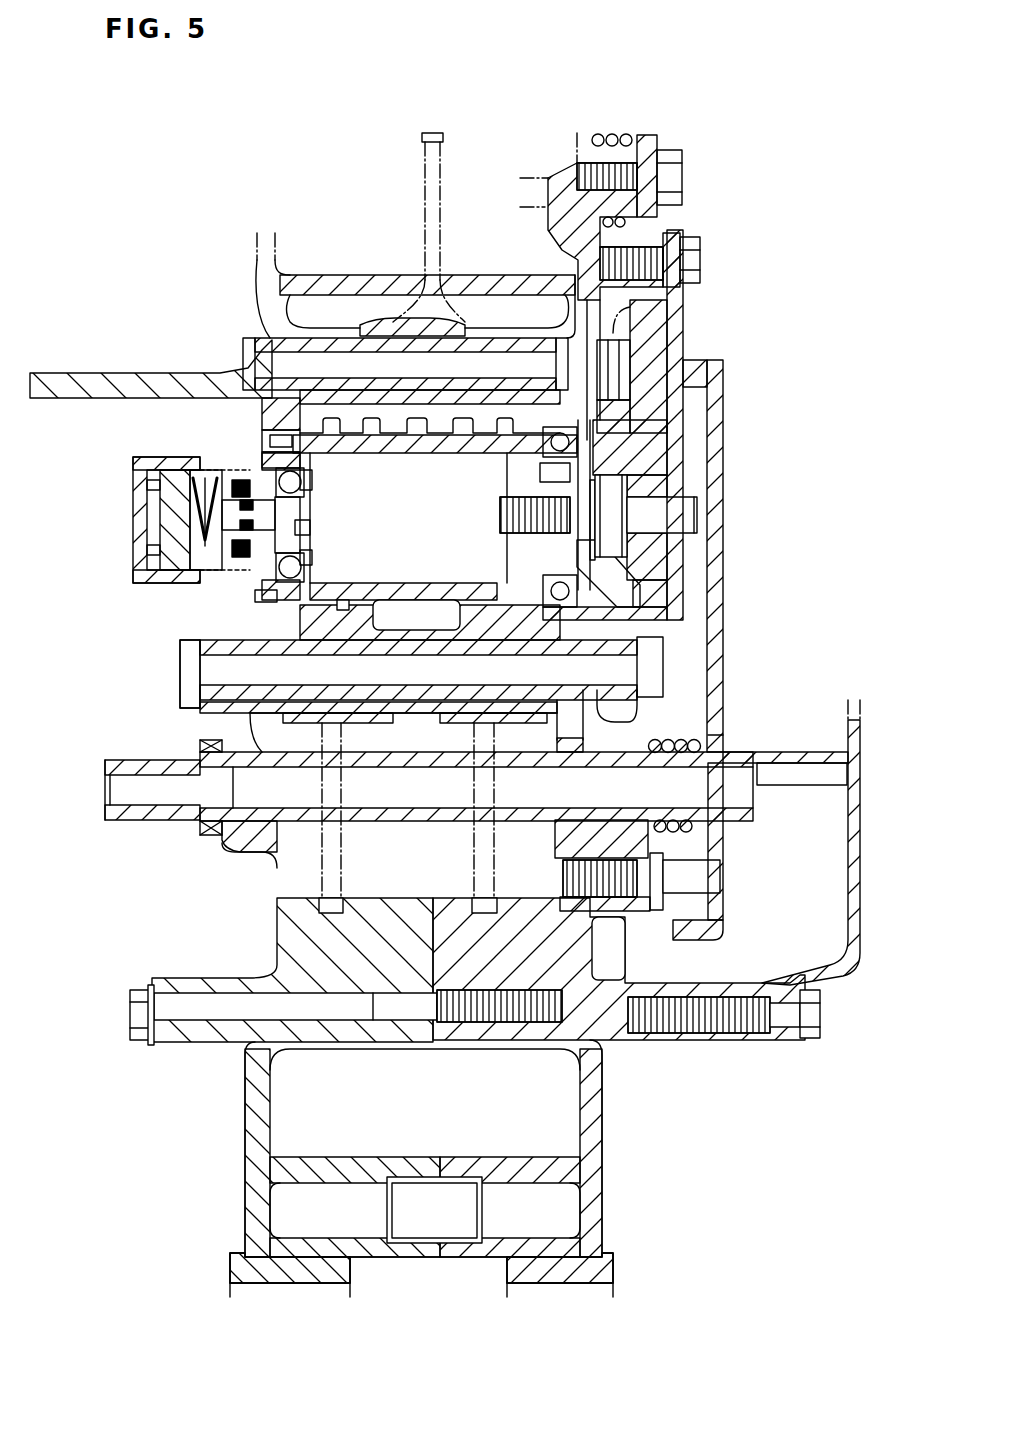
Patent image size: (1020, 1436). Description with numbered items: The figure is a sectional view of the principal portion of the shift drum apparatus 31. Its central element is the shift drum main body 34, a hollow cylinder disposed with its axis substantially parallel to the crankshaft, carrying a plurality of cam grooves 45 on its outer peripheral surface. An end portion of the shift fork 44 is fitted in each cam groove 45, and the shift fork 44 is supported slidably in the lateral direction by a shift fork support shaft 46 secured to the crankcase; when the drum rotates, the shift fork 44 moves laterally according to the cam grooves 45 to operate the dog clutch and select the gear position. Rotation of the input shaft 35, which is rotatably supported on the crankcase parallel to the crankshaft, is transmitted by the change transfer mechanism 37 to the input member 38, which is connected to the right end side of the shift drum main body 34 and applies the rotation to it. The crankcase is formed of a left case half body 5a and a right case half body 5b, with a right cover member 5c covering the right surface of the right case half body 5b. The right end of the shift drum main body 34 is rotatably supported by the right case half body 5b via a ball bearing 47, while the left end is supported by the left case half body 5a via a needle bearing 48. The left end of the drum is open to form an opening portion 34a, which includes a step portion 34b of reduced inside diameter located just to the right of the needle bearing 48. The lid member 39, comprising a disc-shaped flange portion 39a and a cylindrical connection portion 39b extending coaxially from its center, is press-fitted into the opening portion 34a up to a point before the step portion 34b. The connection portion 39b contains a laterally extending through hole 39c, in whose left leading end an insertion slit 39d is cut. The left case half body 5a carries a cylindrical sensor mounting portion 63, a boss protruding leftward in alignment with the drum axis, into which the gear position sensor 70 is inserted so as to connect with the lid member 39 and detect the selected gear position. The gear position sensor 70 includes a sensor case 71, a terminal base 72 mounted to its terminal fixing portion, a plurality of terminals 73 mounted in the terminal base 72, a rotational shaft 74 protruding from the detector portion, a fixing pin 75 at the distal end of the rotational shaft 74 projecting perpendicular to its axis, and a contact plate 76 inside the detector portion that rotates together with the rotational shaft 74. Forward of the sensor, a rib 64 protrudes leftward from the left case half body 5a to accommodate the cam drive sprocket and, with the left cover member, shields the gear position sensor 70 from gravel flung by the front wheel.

The left case half body 5a is at (285, 1262).
The right case half body 5b is at (567, 1266).
The right cover member 5c is at (850, 980).
The shift drum apparatus 31 is at (140, 656).
The shift drum main body 34 is at (413, 595).
The opening portion 34a is at (183, 684).
The step portion 34b is at (316, 618).
The input shaft 35 is at (197, 812).
The change transfer mechanism 37 is at (738, 645).
The input member 38 is at (640, 425).
The lid member 39 is at (316, 496).
The flange portion 39a is at (322, 558).
The connection portion 39b is at (258, 596).
The through hole 39c is at (327, 528).
The insertion slit 39d is at (322, 480).
The shift fork 44 is at (450, 182).
The cam grooves 45 is at (428, 448).
The shift fork support shaft 46 is at (232, 342).
The ball bearing 47 is at (640, 370).
The needle bearing 48 is at (262, 432).
The sensor mounting portion 63 is at (183, 452).
The rib 64 is at (82, 388).
The gear position sensor 70 is at (97, 563).
The sensor case 71 is at (150, 585).
The terminal base 72 is at (142, 490).
The terminals 73 is at (157, 563).
The rotational shaft 74 is at (190, 578).
The fixing pin 75 is at (265, 455).
The contact plate 76 is at (142, 525).